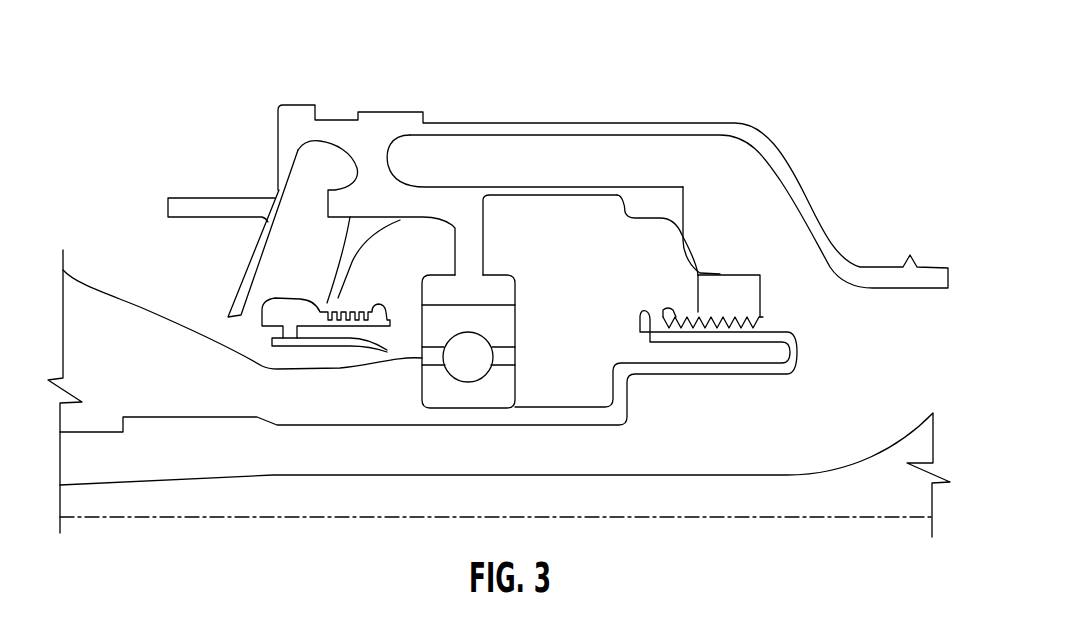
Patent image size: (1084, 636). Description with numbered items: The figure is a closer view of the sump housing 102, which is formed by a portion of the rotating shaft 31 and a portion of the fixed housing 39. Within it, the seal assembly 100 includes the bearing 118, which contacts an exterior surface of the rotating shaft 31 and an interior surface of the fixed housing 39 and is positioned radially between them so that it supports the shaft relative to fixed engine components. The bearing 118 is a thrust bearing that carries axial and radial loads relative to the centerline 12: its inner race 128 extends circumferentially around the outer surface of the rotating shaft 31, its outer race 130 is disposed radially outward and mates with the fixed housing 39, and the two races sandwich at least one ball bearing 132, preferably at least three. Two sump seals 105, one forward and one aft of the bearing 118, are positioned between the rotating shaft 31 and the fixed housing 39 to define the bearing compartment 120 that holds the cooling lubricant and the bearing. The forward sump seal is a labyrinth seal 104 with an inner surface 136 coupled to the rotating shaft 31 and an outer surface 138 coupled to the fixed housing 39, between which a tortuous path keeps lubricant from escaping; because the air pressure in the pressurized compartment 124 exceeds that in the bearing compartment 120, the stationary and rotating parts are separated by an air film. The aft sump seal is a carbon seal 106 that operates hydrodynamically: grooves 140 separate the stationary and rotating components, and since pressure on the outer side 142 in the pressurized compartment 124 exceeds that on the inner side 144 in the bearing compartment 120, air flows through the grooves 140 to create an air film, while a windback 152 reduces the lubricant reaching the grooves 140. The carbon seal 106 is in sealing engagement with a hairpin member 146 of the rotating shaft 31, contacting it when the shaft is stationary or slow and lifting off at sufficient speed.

The seal assembly 100 is at (252, 97).
The sump housing 102 is at (469, 152).
The bearing compartment 120 is at (526, 208).
The fixed housing 39 is at (598, 186).
The pressurized compartment 124 is at (298, 227).
The sump seal 105 is at (323, 292).
The carbon seal 106 is at (822, 282).
The outer side 142 is at (720, 274).
The inner side 144 is at (690, 288).
The windback 152 is at (693, 320).
The grooves 140 is at (746, 320).
The hairpin member 146 is at (806, 359).
The bearing 118 is at (527, 280).
The outer race 130 is at (500, 328).
The ball bearing 132 is at (468, 357).
The inner race 128 is at (497, 387).
The rotating shaft 31 is at (617, 420).
The centerline 12 is at (565, 517).
The inner surface 136 is at (387, 318).
The outer surface 138 is at (282, 310).
The labyrinth seal 104 is at (323, 300).